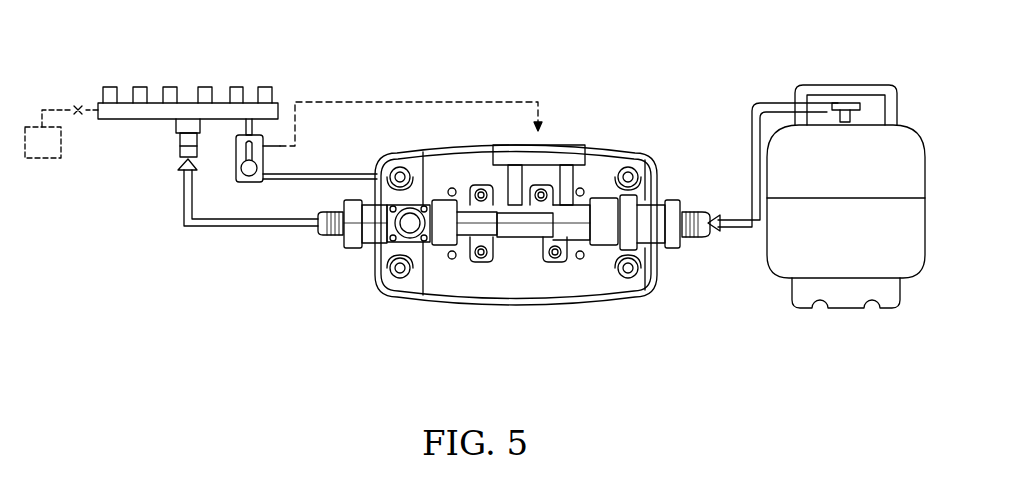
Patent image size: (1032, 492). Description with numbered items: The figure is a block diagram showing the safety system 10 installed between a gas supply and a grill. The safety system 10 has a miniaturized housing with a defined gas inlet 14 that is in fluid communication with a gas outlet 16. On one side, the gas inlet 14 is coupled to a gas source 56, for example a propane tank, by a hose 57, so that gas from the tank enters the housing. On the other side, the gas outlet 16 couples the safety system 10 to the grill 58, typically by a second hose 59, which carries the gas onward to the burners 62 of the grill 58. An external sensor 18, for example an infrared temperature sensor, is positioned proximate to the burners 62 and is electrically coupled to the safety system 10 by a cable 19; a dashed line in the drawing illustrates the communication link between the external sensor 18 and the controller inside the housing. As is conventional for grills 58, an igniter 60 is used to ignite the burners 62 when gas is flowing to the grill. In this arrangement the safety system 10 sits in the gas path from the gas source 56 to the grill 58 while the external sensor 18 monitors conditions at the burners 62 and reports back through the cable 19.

The safety system 10 is at (618, 312).
The gas inlet 14 is at (692, 238).
The gas outlet 16 is at (345, 203).
The external sensor 18 is at (237, 157).
The cable 19 is at (341, 173).
The gas source 56 is at (845, 302).
The hose 57 is at (757, 103).
The grill 58 is at (172, 78).
The second hose 59 is at (250, 228).
The igniter 60 is at (78, 118).
The burners 62 is at (220, 110).